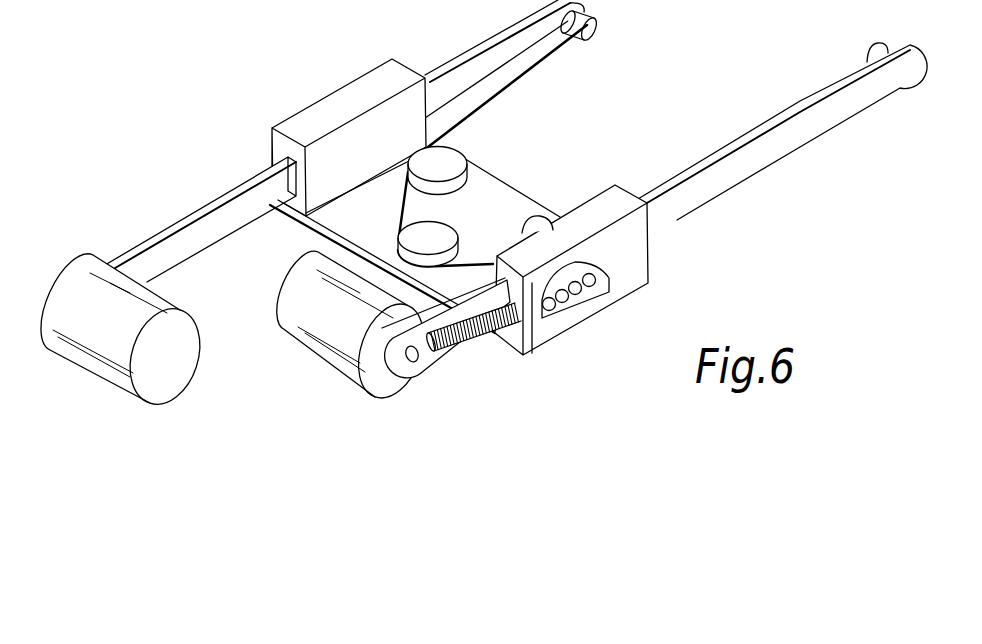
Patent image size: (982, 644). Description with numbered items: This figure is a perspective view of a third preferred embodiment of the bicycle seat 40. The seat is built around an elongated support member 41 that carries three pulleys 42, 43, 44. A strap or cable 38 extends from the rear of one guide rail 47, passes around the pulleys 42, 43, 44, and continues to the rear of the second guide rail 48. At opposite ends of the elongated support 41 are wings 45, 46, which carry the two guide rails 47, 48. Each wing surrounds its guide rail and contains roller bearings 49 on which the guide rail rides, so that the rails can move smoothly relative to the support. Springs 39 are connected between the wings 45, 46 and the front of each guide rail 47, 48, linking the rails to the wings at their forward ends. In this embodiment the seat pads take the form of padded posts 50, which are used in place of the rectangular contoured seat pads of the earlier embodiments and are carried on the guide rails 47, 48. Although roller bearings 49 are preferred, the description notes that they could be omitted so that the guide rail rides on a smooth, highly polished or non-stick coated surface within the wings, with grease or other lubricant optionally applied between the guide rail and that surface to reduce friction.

The strap or cable 38 is at (508, 85).
The springs 39 is at (483, 343).
The bicycle seat 40 is at (366, 61).
The elongated support member 41 is at (503, 180).
The pulley 42 is at (455, 162).
The pulley 43 is at (438, 230).
The pulley 44 is at (545, 213).
The wing 45 is at (302, 107).
The wing 46 is at (638, 257).
The guide rail 47 is at (192, 214).
The guide rail 48 is at (770, 155).
The roller bearings 49 is at (568, 298).
The padded posts 50 is at (303, 357).